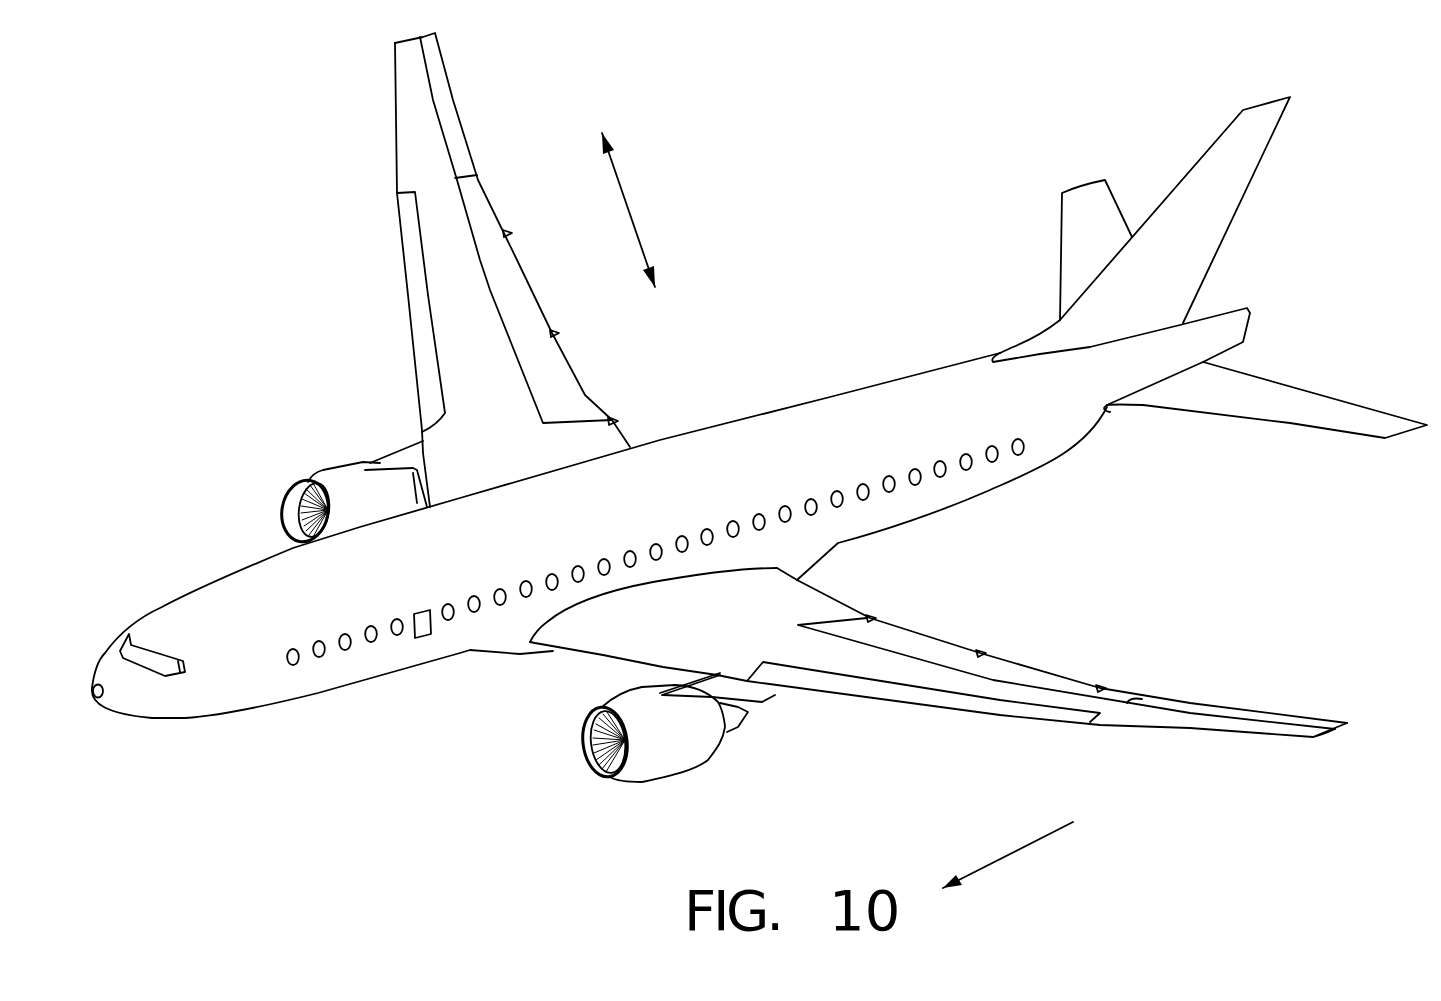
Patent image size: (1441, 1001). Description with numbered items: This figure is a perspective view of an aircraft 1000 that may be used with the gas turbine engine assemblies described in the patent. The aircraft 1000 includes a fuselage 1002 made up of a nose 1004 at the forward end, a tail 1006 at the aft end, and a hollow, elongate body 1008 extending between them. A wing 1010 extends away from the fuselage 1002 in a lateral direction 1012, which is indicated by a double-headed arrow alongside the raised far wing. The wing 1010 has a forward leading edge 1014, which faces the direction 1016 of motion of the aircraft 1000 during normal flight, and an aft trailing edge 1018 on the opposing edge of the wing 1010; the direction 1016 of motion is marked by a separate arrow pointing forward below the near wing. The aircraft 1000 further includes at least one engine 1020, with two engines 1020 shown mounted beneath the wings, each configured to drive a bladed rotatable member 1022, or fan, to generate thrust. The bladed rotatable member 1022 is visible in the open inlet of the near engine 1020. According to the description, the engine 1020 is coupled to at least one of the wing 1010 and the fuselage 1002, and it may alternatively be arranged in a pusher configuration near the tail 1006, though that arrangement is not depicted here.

The aircraft 1000 is at (318, 145).
The fuselage 1002 is at (785, 433).
The nose 1004 is at (175, 623).
The tail 1006 is at (1087, 440).
The hollow, elongate body 1008 is at (523, 551).
The wing 1010 is at (893, 675).
The lateral direction 1012 is at (630, 210).
The forward leading edge 1014 is at (1093, 728).
The direction of motion 1016 is at (1020, 855).
The aft trailing edge 1018 is at (1202, 702).
The engine 1020 is at (338, 470).
The bladed rotatable member 1022 is at (590, 722).